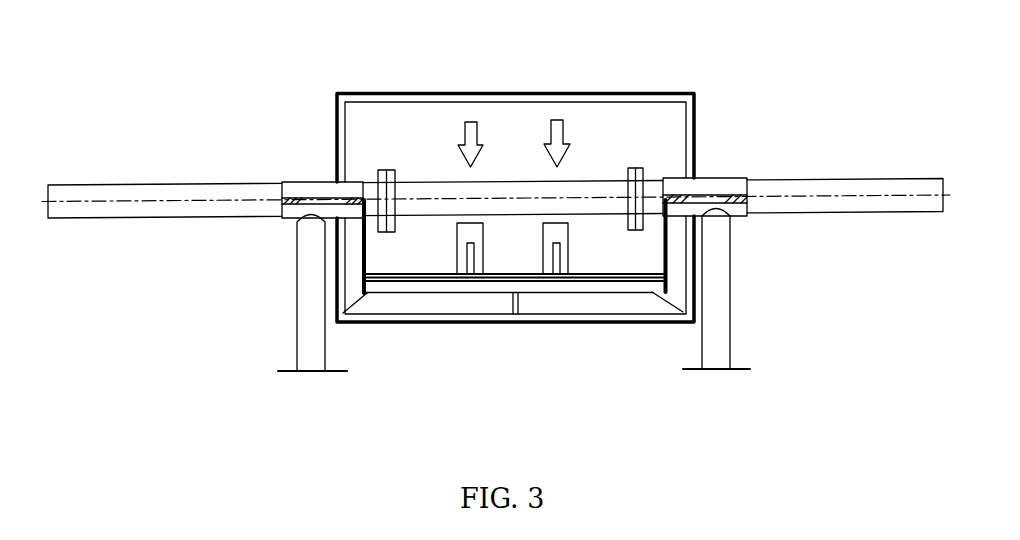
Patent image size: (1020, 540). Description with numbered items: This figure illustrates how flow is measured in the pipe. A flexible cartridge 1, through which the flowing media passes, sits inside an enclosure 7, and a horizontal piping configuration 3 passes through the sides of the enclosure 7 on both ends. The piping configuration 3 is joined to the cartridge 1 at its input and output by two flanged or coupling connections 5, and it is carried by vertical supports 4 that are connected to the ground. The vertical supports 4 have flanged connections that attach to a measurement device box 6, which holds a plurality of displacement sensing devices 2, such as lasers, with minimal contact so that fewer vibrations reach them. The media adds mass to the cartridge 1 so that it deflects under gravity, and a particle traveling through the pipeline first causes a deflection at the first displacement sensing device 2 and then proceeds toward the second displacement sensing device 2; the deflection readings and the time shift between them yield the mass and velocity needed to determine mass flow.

The flexible cartridge 1 is at (580, 193).
The displacement sensing device 2 is at (465, 260).
The piping configuration 3 is at (133, 186).
The vertical support 4 is at (302, 187).
The connection 5 is at (383, 170).
The measurement device box 6 is at (633, 298).
The enclosure 7 is at (442, 92).